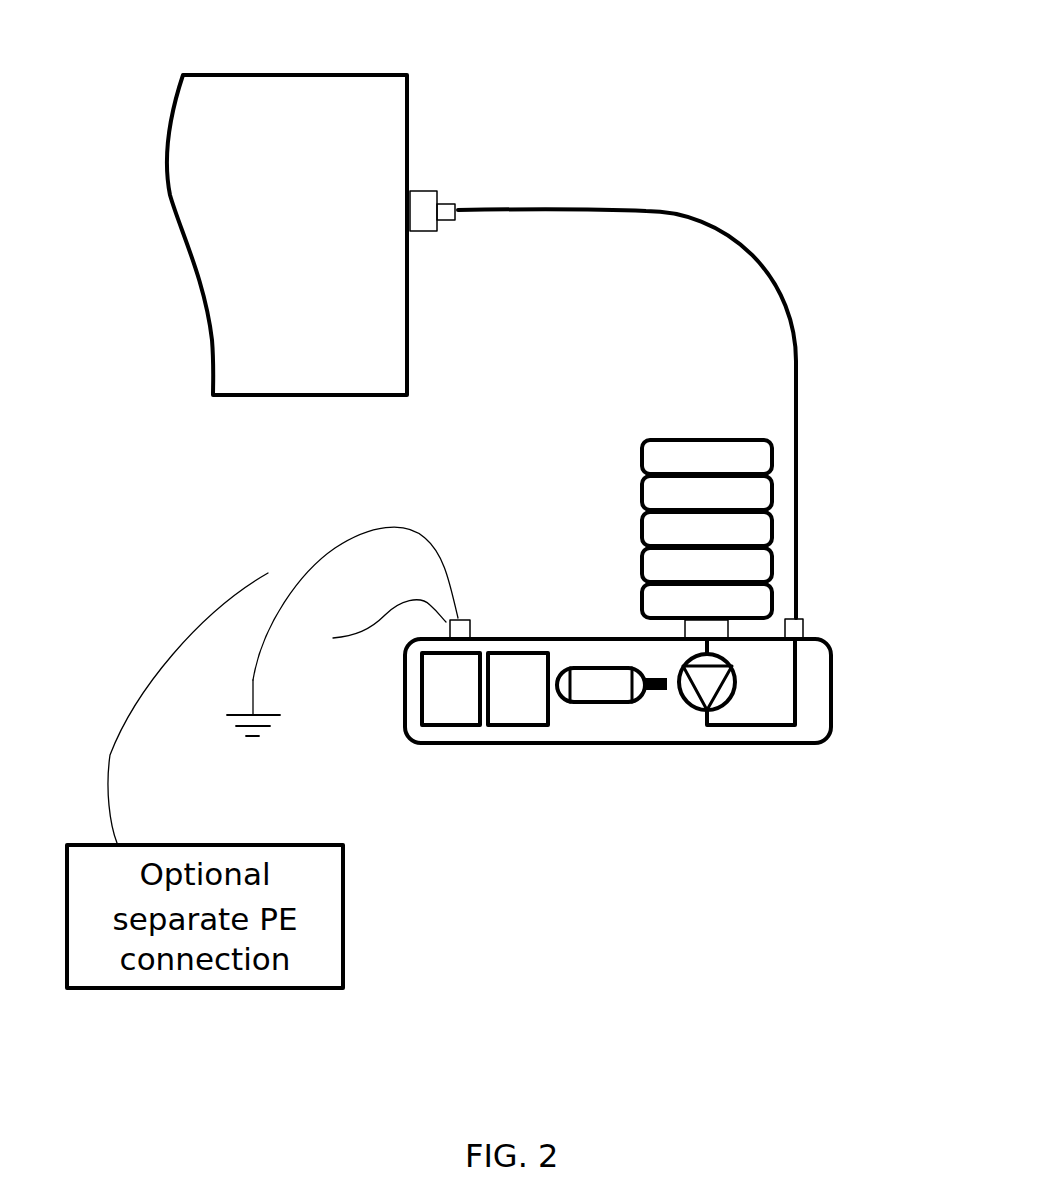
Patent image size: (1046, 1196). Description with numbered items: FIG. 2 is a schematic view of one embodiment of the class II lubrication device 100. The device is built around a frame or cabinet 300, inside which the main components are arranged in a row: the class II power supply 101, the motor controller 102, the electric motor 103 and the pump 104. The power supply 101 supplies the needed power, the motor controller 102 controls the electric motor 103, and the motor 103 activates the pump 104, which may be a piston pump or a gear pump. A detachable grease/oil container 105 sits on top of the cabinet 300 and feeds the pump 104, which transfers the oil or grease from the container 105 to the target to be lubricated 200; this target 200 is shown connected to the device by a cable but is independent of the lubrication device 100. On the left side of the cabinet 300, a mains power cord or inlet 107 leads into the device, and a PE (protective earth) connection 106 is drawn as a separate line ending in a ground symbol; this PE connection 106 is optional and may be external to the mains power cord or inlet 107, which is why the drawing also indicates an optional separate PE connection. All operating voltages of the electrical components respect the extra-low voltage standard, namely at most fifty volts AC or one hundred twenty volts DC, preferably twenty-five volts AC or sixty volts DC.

The class II lubrication device 100 is at (670, 706).
The class II power supply 101 is at (450, 728).
The motor controller 102 is at (521, 728).
The electric motor 103 is at (612, 712).
The pump 104 is at (685, 713).
The grease/oil container 105 is at (703, 427).
The PE connection 106 is at (314, 543).
The mains power cord or inlet 107 is at (355, 655).
The target to be lubricated 200 is at (422, 142).
The frame or cabinet 300 is at (608, 636).